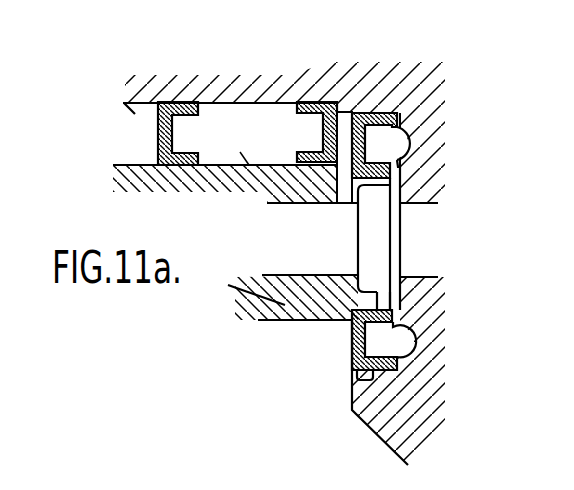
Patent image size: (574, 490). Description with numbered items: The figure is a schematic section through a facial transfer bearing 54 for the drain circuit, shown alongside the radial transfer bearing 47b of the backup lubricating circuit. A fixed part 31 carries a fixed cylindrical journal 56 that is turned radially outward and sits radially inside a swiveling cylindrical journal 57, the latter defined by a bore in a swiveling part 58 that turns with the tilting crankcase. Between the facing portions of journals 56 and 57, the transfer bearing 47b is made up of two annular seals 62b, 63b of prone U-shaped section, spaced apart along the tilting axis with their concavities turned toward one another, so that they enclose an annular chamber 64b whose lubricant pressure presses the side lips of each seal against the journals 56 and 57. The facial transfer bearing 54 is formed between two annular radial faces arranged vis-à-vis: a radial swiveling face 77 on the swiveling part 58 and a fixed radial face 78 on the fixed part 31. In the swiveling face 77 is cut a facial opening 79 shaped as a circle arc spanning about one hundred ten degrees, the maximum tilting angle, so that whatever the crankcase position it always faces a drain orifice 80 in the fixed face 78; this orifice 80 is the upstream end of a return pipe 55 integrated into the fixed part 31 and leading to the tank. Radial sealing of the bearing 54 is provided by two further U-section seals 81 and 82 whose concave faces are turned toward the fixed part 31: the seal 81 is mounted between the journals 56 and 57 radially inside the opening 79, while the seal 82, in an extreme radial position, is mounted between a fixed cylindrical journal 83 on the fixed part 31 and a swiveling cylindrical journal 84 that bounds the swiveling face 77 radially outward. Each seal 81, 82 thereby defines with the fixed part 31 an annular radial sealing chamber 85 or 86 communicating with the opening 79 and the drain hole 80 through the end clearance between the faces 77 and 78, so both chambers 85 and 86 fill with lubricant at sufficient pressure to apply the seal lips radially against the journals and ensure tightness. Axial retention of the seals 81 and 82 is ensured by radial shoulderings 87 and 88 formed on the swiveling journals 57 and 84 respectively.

The transfer bearing 47b is at (184, 71).
The fixed cylindrical journal 56 is at (123, 103).
The seal 62b is at (158, 138).
The annular chamber 64b is at (232, 128).
The seal 63b is at (323, 102).
The annular seal 81 is at (363, 112).
The annular radial sealing chamber 85 is at (378, 150).
The radial swiveling face 77 is at (402, 182).
The fixed radial face 78 is at (428, 180).
The drain orifice 80 is at (396, 234).
The return pipe 55 is at (412, 260).
The swiveling cylindrical journal 57 is at (240, 152).
The radial shouldering 87 is at (357, 168).
The facial opening 79 is at (373, 238).
The swiveling cylindrical journal 84 is at (367, 282).
The swiveling part 58 is at (263, 308).
The radial shouldering 88 is at (345, 318).
The annular seal 82 is at (357, 338).
The fixed cylindrical journal 83 is at (357, 380).
The fixed part 31 is at (402, 422).
The annular radial sealing chamber 86 is at (377, 342).
The facial transfer bearing 54 is at (417, 297).